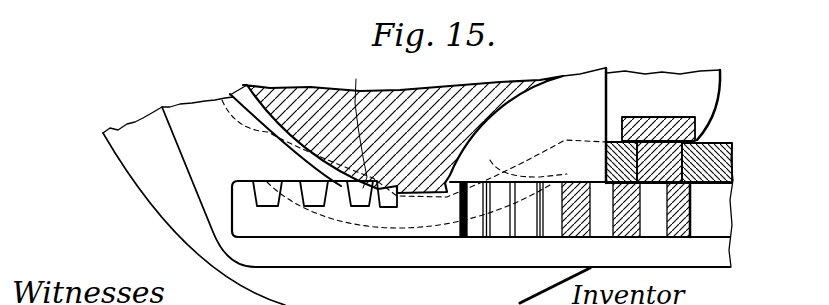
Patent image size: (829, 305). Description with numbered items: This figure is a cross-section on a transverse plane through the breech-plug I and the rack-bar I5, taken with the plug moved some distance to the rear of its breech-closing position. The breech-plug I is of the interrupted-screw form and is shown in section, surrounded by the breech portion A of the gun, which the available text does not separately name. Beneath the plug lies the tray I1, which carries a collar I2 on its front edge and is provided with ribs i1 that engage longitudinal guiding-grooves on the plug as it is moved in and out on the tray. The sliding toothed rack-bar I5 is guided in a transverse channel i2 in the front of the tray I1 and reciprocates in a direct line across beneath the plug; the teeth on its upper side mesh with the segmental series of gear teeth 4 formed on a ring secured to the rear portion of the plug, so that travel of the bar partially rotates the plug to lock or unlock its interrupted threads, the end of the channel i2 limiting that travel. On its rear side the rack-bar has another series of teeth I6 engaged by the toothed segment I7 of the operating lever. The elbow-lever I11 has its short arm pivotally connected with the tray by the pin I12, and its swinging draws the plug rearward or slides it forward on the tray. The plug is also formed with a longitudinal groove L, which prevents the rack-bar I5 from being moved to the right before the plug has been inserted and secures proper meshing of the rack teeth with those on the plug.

The casing A is at (147, 198).
The longitudinal groove L is at (355, 121).
The breech-plug I is at (431, 93).
The tray I1 is at (357, 232).
The collar I2 is at (408, 127).
The gear teeth or cogs 4 is at (262, 162).
The ribs i1 is at (267, 168).
The transverse channel i2 is at (268, 186).
The rack-bar I5 is at (481, 209).
The teeth or cogs I6 is at (696, 208).
The toothed segment I7 is at (583, 242).
The elbow-lever I11 is at (670, 120).
The pin I12 is at (731, 160).